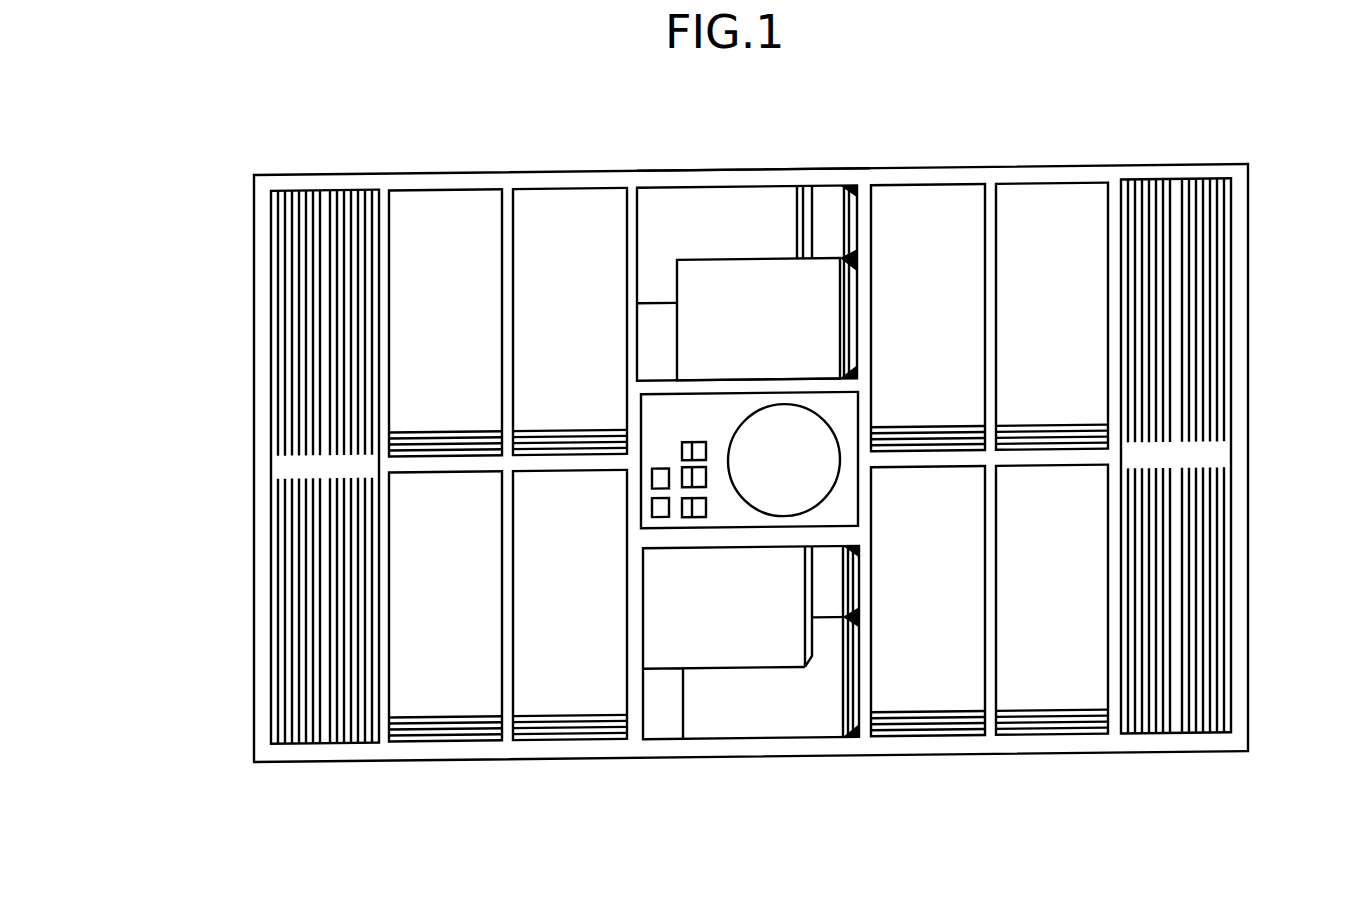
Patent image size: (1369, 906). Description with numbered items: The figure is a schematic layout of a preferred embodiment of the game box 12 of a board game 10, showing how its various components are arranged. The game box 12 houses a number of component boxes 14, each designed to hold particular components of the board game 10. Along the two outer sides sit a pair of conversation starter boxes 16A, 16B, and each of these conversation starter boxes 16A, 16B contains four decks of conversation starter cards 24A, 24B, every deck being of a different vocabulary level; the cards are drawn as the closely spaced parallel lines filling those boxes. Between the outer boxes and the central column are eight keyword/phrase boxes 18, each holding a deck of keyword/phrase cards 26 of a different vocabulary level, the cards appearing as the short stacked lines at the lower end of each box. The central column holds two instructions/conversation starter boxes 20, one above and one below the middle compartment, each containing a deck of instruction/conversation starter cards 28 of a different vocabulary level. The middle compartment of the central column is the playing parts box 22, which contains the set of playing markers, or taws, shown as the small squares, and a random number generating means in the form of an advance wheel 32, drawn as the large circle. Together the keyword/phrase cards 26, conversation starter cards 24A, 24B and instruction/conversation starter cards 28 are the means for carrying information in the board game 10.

The board game 10 is at (967, 140).
The game box 12 is at (532, 180).
The component boxes 14 is at (852, 145).
The conversation starter box 16A is at (1243, 243).
The conversation starter box 16B is at (262, 265).
The keyword/phrase boxes 18 is at (483, 745).
The instructions/conversation starter boxes 20 is at (710, 180).
The playing parts box 22 is at (705, 545).
The conversation starter cards 24A is at (1215, 360).
The conversation starter cards 24B is at (288, 578).
The keyword/phrase cards 26 is at (544, 728).
The instruction/conversation starter cards 28 is at (758, 702).
The advance wheel 32 is at (797, 478).